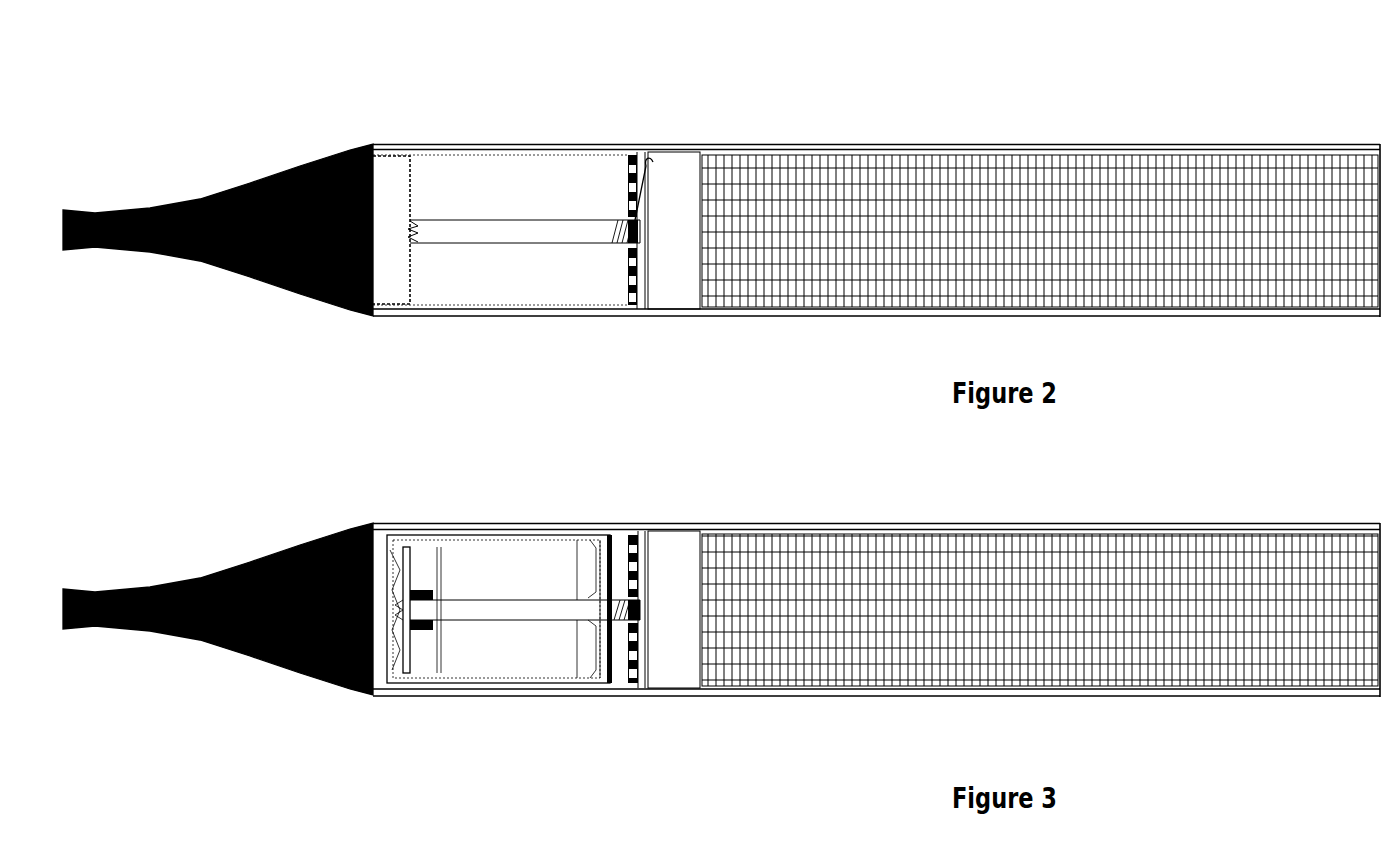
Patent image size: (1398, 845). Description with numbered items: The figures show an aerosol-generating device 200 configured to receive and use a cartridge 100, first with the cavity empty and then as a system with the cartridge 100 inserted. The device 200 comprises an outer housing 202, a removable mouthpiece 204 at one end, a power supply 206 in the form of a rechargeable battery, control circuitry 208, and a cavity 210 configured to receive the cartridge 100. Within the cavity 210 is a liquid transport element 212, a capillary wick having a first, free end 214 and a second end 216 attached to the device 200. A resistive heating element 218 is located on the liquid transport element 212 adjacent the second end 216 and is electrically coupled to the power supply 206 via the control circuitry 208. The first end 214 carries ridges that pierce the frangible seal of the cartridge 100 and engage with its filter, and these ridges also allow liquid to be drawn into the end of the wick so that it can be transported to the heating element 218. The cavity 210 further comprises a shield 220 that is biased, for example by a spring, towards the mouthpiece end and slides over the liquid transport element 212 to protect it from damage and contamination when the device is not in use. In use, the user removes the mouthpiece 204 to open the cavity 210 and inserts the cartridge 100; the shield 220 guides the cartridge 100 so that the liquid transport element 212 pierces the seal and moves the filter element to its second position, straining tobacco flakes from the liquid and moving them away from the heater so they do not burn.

In FIG. 3, the cartridge 100 is at (520, 557).
In FIG. 2, the aerosol-generating device 200 is at (811, 103).
In FIG. 3, the aerosol-generating device 200 is at (736, 500).
In FIG. 2, the outer housing 202 is at (1031, 148).
In FIG. 3, the outer housing 202 is at (1026, 528).
In FIG. 2, the removable mouthpiece 204 is at (262, 213).
In FIG. 3, the removable mouthpiece 204 is at (255, 592).
In FIG. 2, the power supply 206 is at (1194, 175).
In FIG. 3, the power supply 206 is at (1332, 565).
In FIG. 2, the control circuitry 208 is at (668, 290).
In FIG. 3, the control circuitry 208 is at (665, 658).
In FIG. 2, the cavity 210 is at (467, 165).
In FIG. 2, the liquid transport element 212 is at (493, 235).
In FIG. 2, the first end 214 is at (413, 232).
In FIG. 2, the second end 216 is at (628, 173).
In FIG. 2, the resistive heating element 218 is at (620, 227).
In FIG. 3, the resistive heating element 218 is at (617, 607).
In FIG. 2, the shield 220 is at (400, 170).